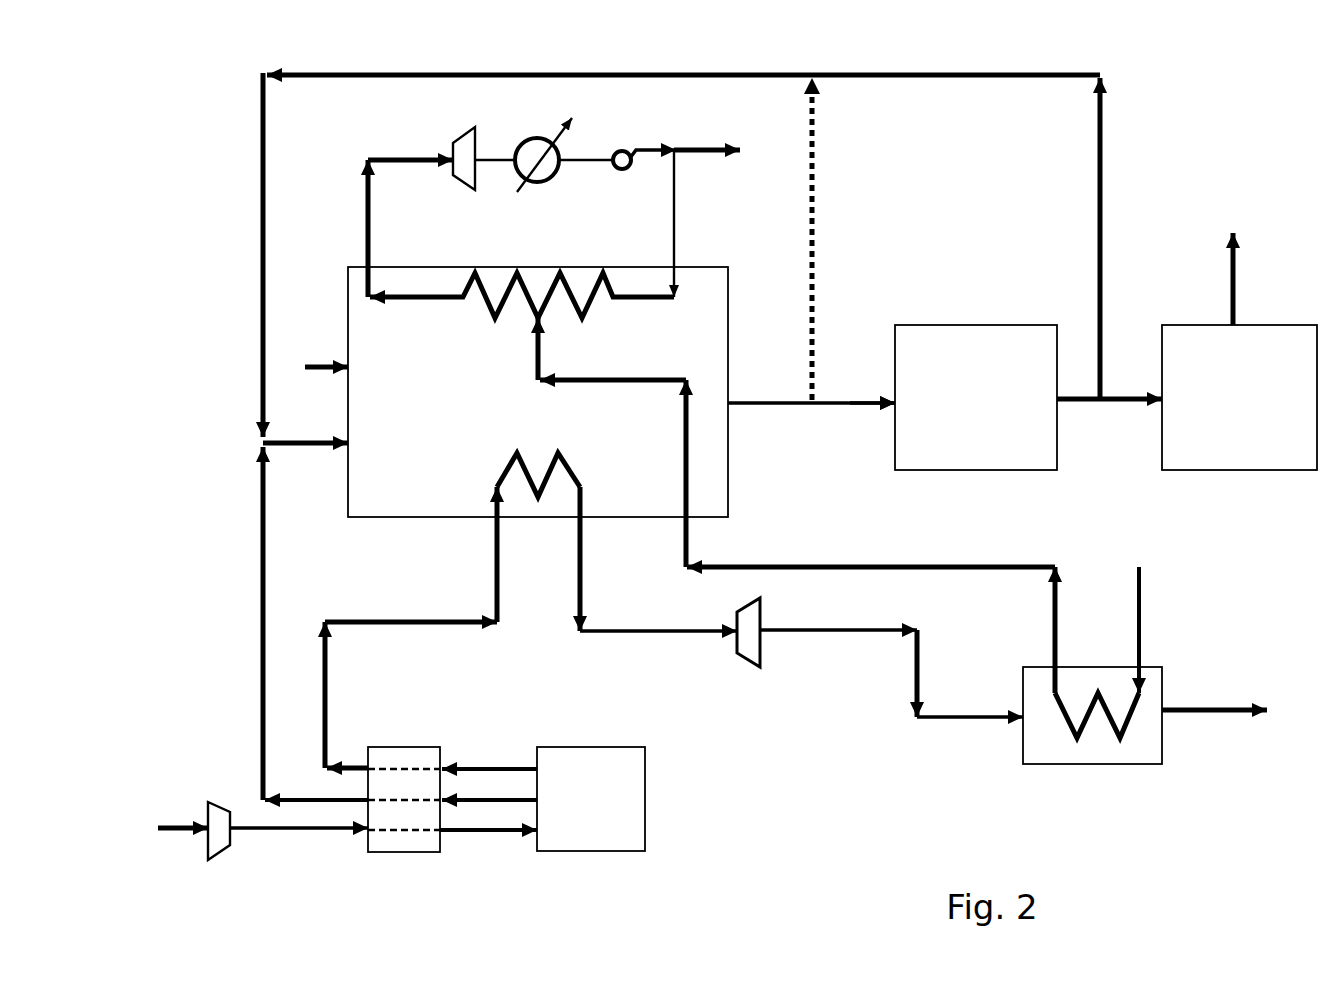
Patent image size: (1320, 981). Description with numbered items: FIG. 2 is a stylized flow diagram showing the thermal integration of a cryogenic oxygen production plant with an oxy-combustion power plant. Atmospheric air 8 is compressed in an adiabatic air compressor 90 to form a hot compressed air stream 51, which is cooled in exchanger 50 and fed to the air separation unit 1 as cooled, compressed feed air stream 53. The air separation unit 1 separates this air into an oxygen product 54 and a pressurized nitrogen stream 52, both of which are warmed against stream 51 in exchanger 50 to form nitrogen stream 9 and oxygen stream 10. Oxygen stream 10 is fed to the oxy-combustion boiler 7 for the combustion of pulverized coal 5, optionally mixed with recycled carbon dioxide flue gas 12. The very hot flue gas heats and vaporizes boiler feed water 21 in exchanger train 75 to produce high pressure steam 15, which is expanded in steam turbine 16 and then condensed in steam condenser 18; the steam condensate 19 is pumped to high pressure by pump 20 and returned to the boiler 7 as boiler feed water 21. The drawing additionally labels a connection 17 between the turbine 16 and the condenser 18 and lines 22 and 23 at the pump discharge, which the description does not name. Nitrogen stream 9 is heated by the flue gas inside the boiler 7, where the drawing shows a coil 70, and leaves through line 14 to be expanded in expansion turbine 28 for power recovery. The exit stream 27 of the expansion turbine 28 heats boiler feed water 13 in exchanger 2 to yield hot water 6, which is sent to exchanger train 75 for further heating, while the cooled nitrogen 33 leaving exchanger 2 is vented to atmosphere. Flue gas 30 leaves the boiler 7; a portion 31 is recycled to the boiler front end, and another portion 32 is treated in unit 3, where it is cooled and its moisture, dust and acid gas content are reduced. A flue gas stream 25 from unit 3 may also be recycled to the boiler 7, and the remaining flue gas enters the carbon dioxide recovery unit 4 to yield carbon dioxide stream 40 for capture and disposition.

The air separation unit 1 is at (636, 811).
The exchanger 2 is at (1064, 757).
The unit 3 is at (976, 397).
The CO2 recovery unit 4 is at (1239, 397).
The pulverized coal 5 is at (315, 358).
The hot water 6 is at (827, 560).
The oxy-combustion boiler 7 is at (708, 318).
The atmospheric air 8 is at (187, 830).
The nitrogen stream 9 is at (434, 624).
The oxygen stream 10 is at (260, 540).
The recycled CO2 flue gas 12 is at (328, 75).
The boiler feed water 13 is at (1140, 648).
The outlet line 14 is at (583, 598).
The high pressure steam 15 is at (367, 242).
The steam turbine 16 is at (462, 148).
The connecting line 17 is at (497, 163).
The steam condenser 18 is at (538, 147).
The steam condensate 19 is at (582, 157).
The pump 20 is at (622, 170).
The boiler feed water 21 is at (677, 212).
The product outlet 22 is at (700, 157).
The outlet line 23 is at (643, 150).
The flue gas stream 25 is at (1100, 267).
The exit stream 27 is at (975, 728).
The expansion turbine 28 is at (748, 643).
The flue gas 30 is at (742, 407).
The portion of flue gas 31 is at (813, 187).
The portion of flue gas 32 is at (863, 407).
The cooled nitrogen 33 is at (1192, 715).
The CO2 stream 40 is at (1237, 293).
The exchanger 50 is at (390, 845).
The compressed air stream 51 is at (320, 835).
The pressurized nitrogen stream 52 is at (500, 768).
The cooled, compressed feed air stream 53 is at (477, 836).
The oxygen product 54 is at (487, 804).
The heating coil 70 is at (513, 468).
The exchanger train 75 is at (484, 312).
The air compressor 90 is at (220, 802).